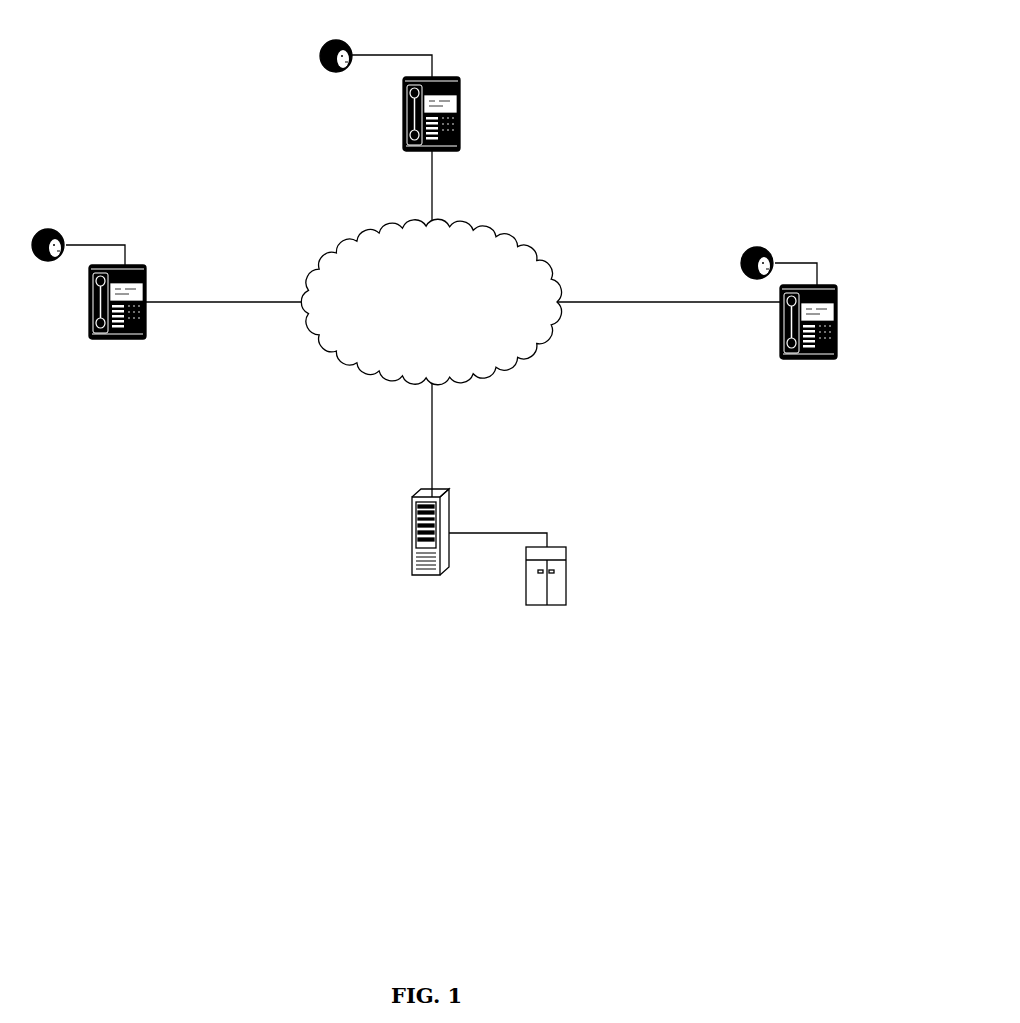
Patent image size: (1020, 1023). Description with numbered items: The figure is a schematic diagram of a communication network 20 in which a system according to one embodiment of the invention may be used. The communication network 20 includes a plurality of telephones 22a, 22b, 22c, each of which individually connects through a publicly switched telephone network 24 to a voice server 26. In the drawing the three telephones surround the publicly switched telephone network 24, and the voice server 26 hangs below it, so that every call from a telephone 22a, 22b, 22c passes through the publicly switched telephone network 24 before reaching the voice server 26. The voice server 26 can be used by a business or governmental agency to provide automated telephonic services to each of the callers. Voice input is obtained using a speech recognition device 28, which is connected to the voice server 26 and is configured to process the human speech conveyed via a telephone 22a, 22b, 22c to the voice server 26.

The communication network 20 is at (647, 34).
The telephone 22a is at (145, 280).
The telephone 22b is at (460, 93).
The telephone 22c is at (836, 318).
The publicly switched telephone network 24 is at (431, 301).
The voice server 26 is at (451, 508).
The speech recognition device 28 is at (566, 575).